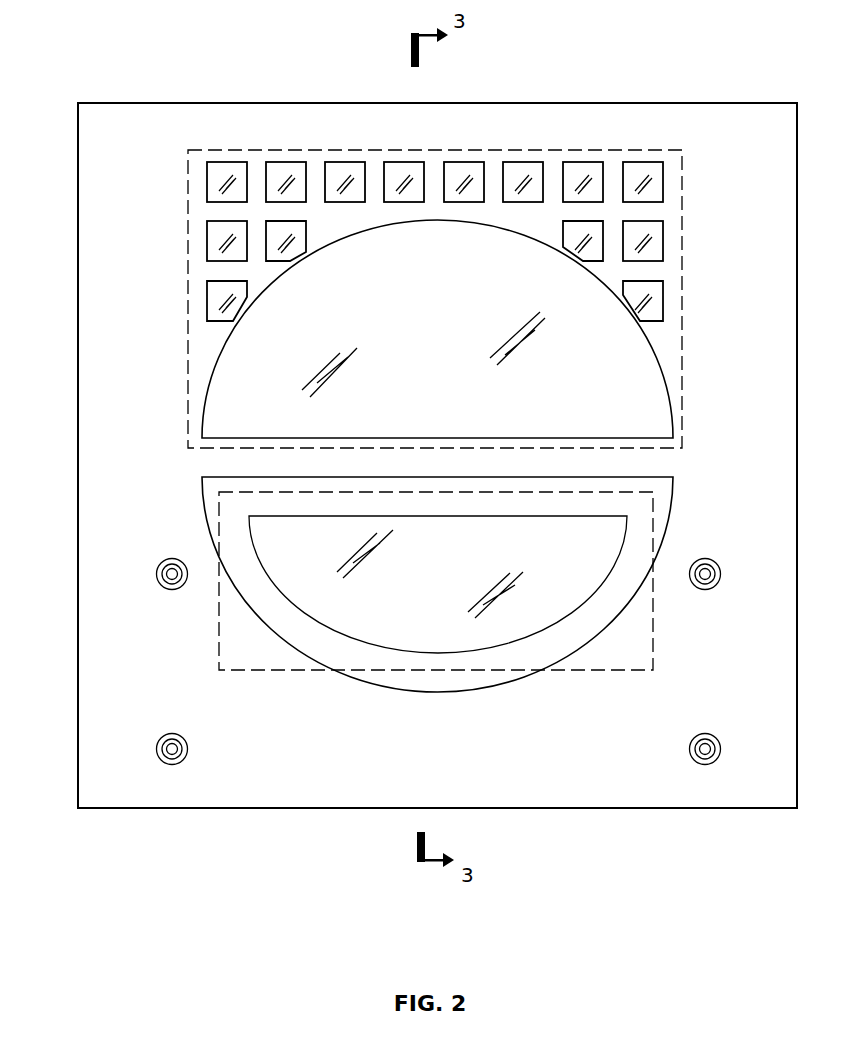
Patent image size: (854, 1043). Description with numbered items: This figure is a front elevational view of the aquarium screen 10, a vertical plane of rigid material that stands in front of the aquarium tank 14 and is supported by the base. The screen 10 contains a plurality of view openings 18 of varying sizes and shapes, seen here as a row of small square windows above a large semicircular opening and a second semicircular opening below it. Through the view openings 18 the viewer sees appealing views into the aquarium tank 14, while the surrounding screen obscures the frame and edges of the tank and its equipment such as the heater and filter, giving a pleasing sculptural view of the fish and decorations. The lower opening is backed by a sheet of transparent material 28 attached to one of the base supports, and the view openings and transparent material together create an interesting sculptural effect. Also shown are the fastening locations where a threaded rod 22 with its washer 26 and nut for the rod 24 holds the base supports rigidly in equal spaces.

The aquarium screen 10 is at (78, 443).
The aquarium tank 14 is at (682, 172).
The view openings 18 is at (222, 360).
The threaded rods 22 is at (711, 749).
The nuts for rods 24 is at (703, 735).
The washers 26 is at (716, 739).
The sheet of transparent material 28 is at (250, 670).